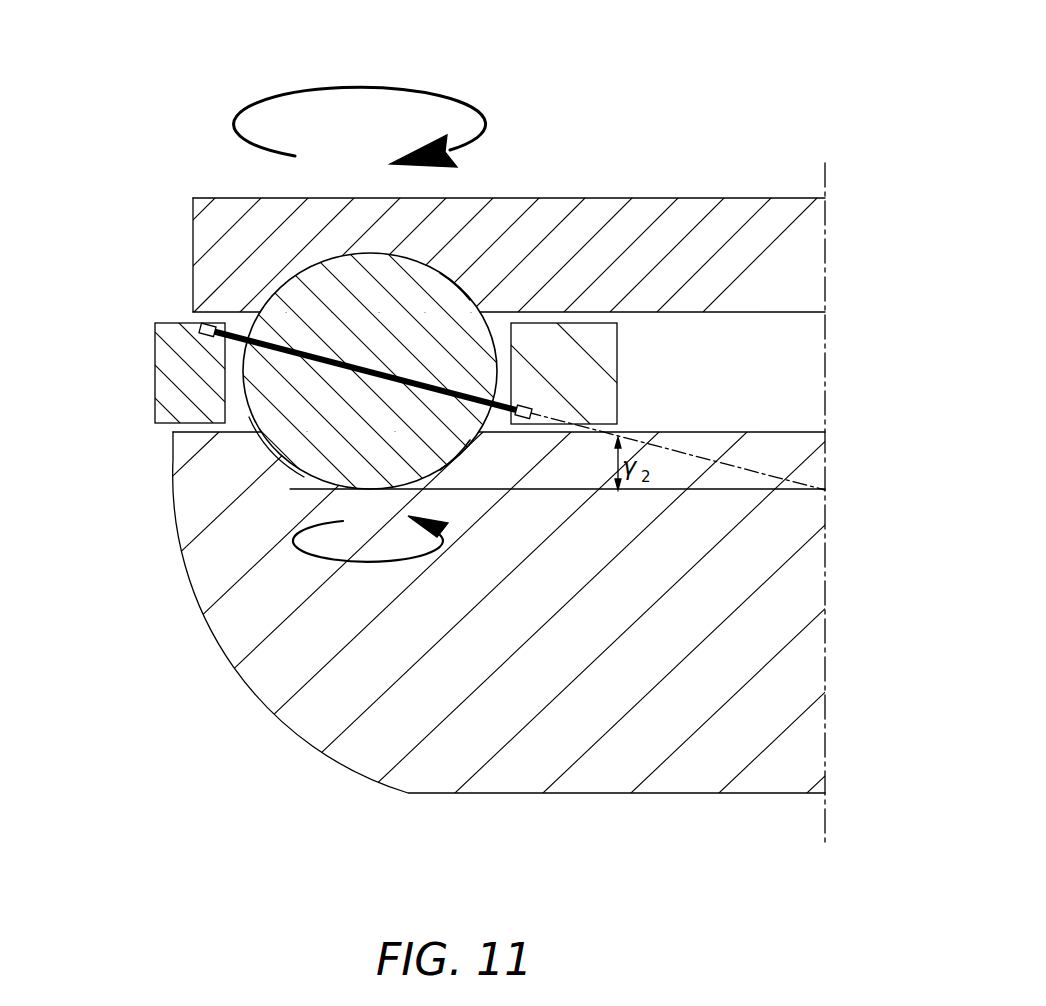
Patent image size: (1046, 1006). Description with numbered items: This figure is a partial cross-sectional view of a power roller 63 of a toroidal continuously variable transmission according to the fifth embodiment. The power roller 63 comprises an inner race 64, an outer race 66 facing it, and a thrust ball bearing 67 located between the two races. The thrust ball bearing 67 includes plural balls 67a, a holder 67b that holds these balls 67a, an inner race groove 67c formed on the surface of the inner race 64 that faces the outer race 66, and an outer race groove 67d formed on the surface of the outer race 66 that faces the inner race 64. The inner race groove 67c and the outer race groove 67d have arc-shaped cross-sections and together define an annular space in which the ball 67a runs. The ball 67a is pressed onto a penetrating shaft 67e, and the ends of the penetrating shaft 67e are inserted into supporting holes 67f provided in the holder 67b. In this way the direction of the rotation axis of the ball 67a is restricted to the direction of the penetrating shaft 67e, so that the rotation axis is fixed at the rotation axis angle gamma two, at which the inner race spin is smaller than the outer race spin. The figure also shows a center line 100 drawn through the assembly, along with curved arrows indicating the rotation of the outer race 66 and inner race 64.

The power roller 63 is at (612, 48).
The inner race 64 is at (428, 785).
The outer race 66 is at (683, 210).
The thrust ball bearing 67 is at (146, 370).
The ball 67a is at (327, 277).
The holder 67b is at (590, 338).
The inner race groove 67c is at (460, 438).
The outer race groove 67d is at (450, 285).
The penetrating shaft 67e is at (363, 368).
The supporting hole 67f is at (210, 334).
The rotation axis 100 is at (828, 178).